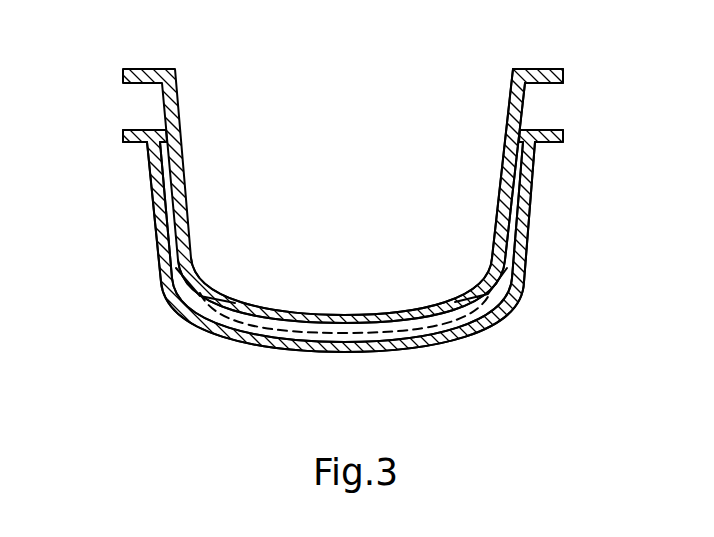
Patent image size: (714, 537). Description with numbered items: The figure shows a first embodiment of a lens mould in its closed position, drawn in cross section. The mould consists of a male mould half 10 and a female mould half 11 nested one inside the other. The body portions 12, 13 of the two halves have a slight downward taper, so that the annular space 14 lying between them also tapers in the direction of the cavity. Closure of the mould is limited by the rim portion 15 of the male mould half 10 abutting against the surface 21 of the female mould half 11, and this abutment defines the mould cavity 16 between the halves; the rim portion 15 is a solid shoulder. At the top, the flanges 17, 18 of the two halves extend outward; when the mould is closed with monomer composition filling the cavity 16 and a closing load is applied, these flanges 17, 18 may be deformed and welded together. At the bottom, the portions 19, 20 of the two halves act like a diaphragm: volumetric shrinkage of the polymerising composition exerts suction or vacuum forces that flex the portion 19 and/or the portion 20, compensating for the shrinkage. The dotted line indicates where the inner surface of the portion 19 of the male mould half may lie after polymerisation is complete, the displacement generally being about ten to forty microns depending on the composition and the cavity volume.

The male mould half 10 is at (398, 100).
The female mould half 11 is at (531, 215).
The body portion of male mould half 12 is at (500, 180).
The body portion of female mould half 13 is at (528, 262).
The annular space 14 is at (156, 213).
The rim portion 15 is at (505, 285).
The mould cavity 16 is at (238, 302).
The flange of male mould half 17 is at (552, 70).
The flange of female mould half 18 is at (560, 128).
The diaphragm portion of male mould half 19 is at (342, 315).
The diaphragm portion of female mould half 20 is at (310, 352).
The surface of female mould half 21 is at (398, 345).